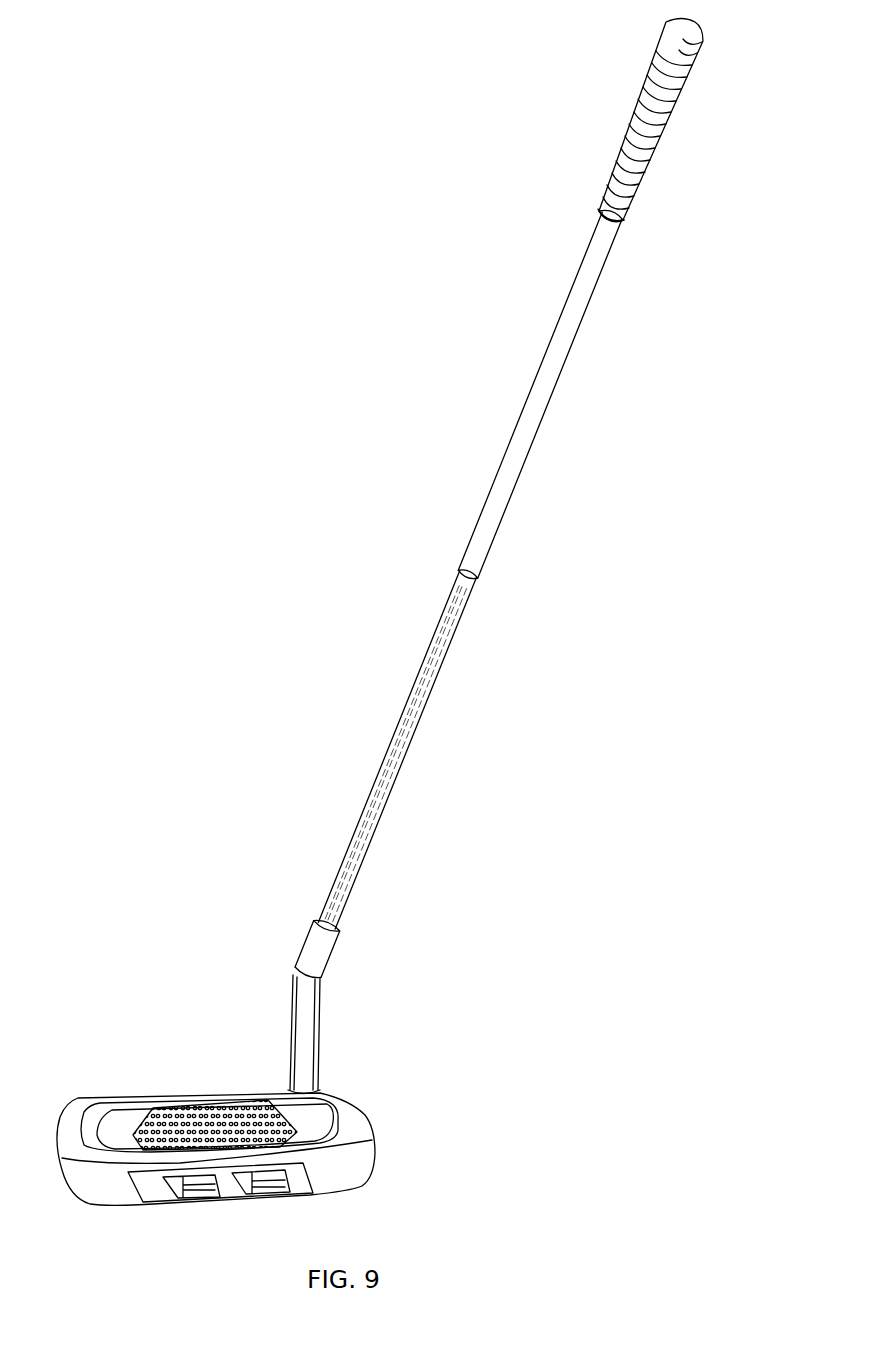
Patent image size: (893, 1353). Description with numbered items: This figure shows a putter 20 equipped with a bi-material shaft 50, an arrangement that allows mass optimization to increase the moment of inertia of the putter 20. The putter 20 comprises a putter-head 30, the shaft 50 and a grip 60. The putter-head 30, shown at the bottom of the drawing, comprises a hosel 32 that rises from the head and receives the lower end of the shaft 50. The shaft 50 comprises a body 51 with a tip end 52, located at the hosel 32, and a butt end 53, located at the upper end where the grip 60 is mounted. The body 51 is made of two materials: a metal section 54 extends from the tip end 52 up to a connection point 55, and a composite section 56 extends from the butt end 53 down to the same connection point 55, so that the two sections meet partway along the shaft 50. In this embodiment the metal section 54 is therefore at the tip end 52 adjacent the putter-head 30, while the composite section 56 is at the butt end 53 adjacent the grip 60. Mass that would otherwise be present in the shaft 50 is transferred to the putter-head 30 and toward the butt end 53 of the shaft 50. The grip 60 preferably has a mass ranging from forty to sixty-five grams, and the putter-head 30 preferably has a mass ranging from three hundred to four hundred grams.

The putter 20 is at (283, 558).
The putter-head 30 is at (139, 1085).
The hosel 32 is at (322, 980).
The shaft 50 is at (579, 560).
The body 51 is at (521, 470).
The tip end 52 is at (302, 919).
The butt end 53 is at (636, 229).
The metal section 54 is at (379, 769).
The connection point 55 is at (459, 574).
The composite section 56 is at (586, 335).
The grip 60 is at (671, 104).